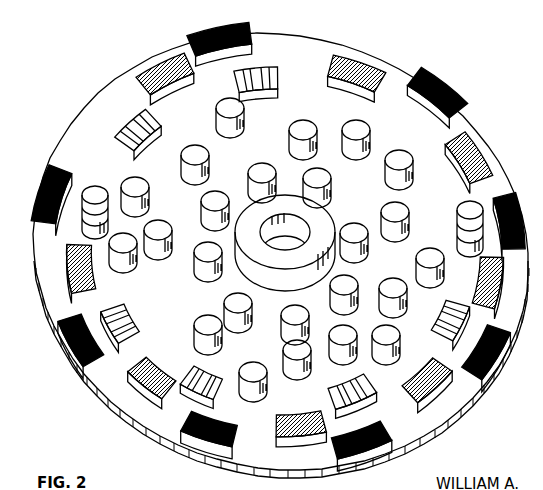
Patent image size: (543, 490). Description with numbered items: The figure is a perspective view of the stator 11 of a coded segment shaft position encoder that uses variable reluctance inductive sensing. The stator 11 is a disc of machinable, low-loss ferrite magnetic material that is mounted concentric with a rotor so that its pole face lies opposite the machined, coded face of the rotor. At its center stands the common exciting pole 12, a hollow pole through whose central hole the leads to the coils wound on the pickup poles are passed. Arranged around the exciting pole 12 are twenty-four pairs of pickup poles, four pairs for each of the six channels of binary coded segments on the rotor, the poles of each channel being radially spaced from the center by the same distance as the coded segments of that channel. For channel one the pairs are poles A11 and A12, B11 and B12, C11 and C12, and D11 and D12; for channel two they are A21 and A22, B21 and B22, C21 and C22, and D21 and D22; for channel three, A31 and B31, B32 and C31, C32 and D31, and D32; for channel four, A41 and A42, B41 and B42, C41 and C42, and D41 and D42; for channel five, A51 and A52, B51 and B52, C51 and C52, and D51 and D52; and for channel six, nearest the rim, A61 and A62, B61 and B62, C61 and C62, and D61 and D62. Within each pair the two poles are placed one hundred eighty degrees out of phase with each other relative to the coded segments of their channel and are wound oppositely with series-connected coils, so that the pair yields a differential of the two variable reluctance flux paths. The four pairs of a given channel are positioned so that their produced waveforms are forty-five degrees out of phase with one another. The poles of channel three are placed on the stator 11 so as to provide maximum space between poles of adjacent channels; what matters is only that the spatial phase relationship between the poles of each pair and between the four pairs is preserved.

The stator 11 is at (474, 118).
The common exciting pole 12 is at (304, 261).
The pickup pole A11 is at (362, 233).
The pickup pole A12 is at (210, 255).
The pickup pole A21 is at (398, 208).
The pickup pole A22 is at (398, 290).
The pickup pole A31 is at (126, 256).
The pickup pole A41 is at (463, 202).
The pickup pole A42 is at (136, 328).
The pickup pole A51 is at (505, 294).
The pickup pole A52 is at (70, 246).
The pickup pole A61 is at (523, 220).
The pickup pole A62 is at (63, 336).
The pickup pole B11 is at (348, 287).
The pickup pole B12 is at (226, 189).
The pickup pole B21 is at (298, 372).
The pickup pole B22 is at (205, 322).
The pickup pole B31 is at (139, 184).
The pickup pole B32 is at (432, 254).
The pickup pole B41 is at (455, 301).
The pickup pole B42 is at (97, 187).
The pickup pole B51 is at (432, 398).
The pickup pole B52 is at (150, 70).
The pickup pole B61 is at (496, 362).
The pickup pole B62 is at (40, 192).
The pickup pole C11 is at (299, 319).
The pickup pole C12 is at (258, 166).
The pickup pole C21 is at (157, 226).
The pickup pole C22 is at (195, 147).
The pickup pole C31 is at (238, 112).
The pickup pole C32 is at (391, 340).
The pickup pole C41 is at (364, 384).
The pickup pole C42 is at (118, 133).
The pickup pole C51 is at (294, 440).
The pickup pole C52 is at (352, 58).
The pickup pole C61 is at (378, 436).
The pickup pole C62 is at (218, 28).
The pickup pole D11 is at (246, 306).
The pickup pole D12 is at (321, 175).
The pickup pole D21 is at (305, 124).
The pickup pole D22 is at (335, 338).
The pickup pole D31 is at (401, 154).
The pickup pole D32 is at (360, 124).
The pickup pole D41 is at (210, 378).
The pickup pole D42 is at (280, 78).
The pickup pole D51 is at (134, 383).
The pickup pole D52 is at (485, 152).
The pickup pole D61 is at (216, 428).
The pickup pole D62 is at (445, 90).